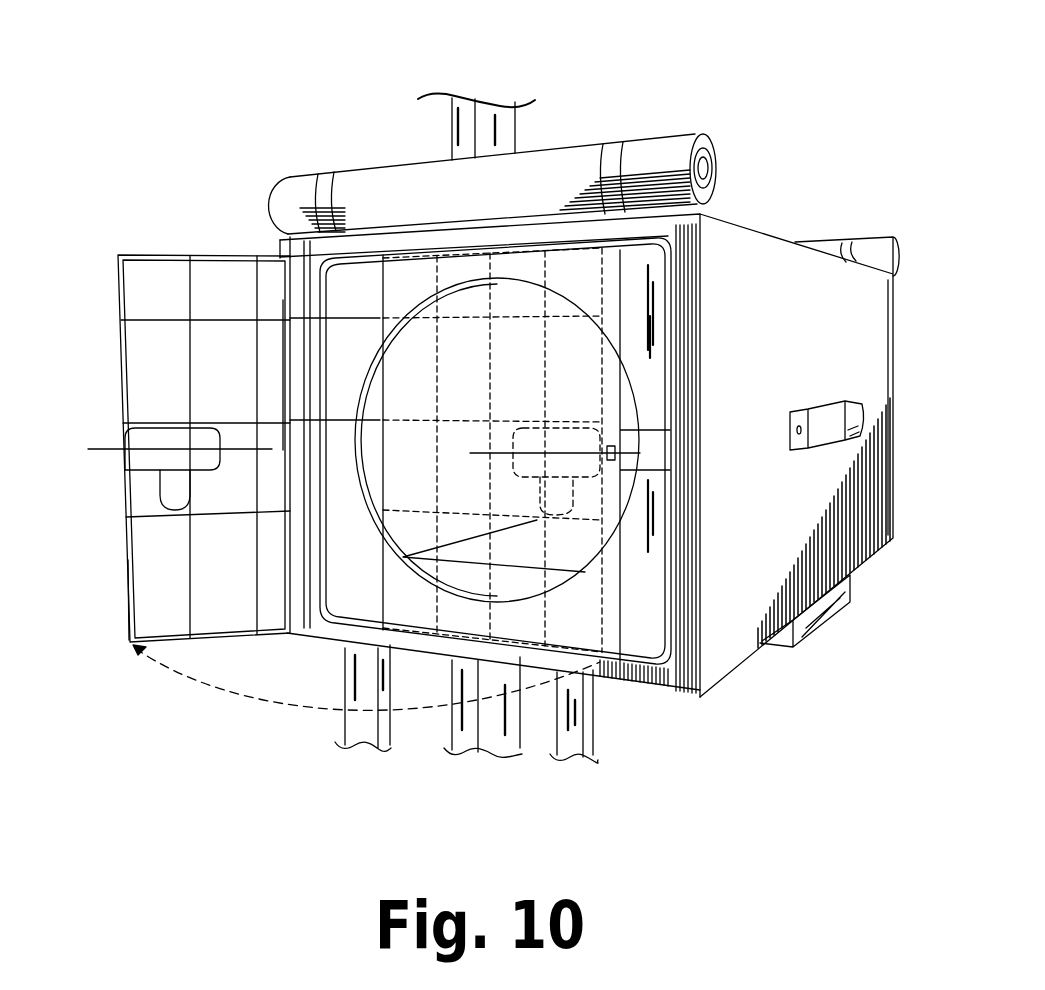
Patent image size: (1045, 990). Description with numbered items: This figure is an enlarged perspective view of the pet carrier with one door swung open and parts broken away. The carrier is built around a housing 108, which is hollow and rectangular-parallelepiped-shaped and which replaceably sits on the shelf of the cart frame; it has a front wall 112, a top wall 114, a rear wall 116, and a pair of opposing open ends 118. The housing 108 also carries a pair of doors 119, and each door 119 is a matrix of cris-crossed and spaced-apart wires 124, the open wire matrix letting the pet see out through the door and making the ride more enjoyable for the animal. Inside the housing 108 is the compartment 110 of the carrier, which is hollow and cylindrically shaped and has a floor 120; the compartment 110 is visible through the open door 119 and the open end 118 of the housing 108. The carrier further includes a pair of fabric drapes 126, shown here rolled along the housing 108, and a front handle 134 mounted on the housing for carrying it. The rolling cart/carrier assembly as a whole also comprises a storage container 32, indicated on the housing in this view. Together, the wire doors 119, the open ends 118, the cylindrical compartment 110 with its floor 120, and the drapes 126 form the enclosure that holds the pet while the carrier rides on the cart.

The storage container 32 is at (898, 336).
The housing 108 is at (721, 213).
The compartment 110 is at (355, 405).
The front wall 112 is at (727, 608).
The top wall 114 is at (758, 232).
The rear wall 116 is at (283, 405).
The open ends 118 is at (577, 607).
The doors 119 is at (125, 595).
The floor 120 is at (513, 557).
The cris-crossed and spaced-apart wires 124 is at (116, 288).
The fabric drapes 126 is at (403, 161).
The front handle 134 is at (845, 404).